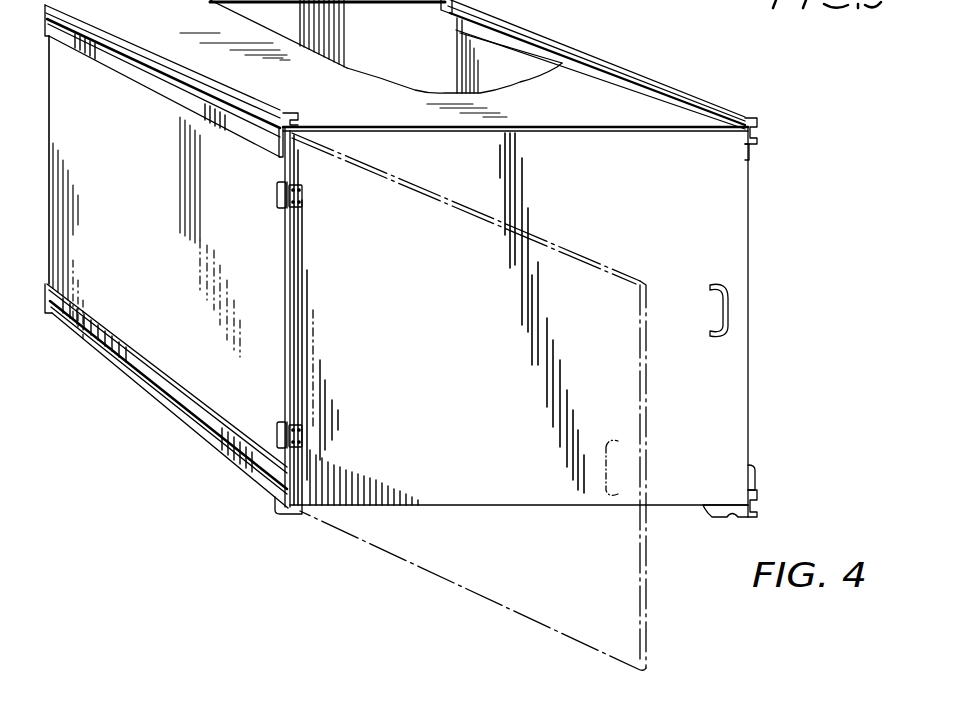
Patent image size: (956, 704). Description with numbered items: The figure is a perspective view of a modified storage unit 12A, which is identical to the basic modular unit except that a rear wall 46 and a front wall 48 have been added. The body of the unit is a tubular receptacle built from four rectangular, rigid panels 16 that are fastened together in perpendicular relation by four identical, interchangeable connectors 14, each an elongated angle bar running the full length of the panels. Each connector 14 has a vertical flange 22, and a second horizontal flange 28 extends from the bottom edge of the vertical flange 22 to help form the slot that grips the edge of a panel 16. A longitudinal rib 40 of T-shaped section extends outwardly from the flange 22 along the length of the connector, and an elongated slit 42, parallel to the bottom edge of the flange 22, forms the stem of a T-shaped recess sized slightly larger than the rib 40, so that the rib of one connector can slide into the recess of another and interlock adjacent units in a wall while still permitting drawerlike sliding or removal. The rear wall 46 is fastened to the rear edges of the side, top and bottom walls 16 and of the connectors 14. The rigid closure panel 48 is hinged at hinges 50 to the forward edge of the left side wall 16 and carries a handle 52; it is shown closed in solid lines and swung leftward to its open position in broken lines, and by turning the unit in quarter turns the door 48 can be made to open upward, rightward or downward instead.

The modified storage unit 12A is at (722, 54).
The connector 14 is at (186, 60).
The panel 16 is at (168, 249).
The vertical flange 22 is at (748, 153).
The second horizontal flange 28 is at (257, 133).
The longitudinal rib 40 is at (758, 134).
The elongated slit 42 is at (758, 497).
The rear wall 46 is at (414, 47).
The front wall 48 is at (657, 197).
The hinge 50 is at (303, 197).
The handle 52 is at (722, 307).